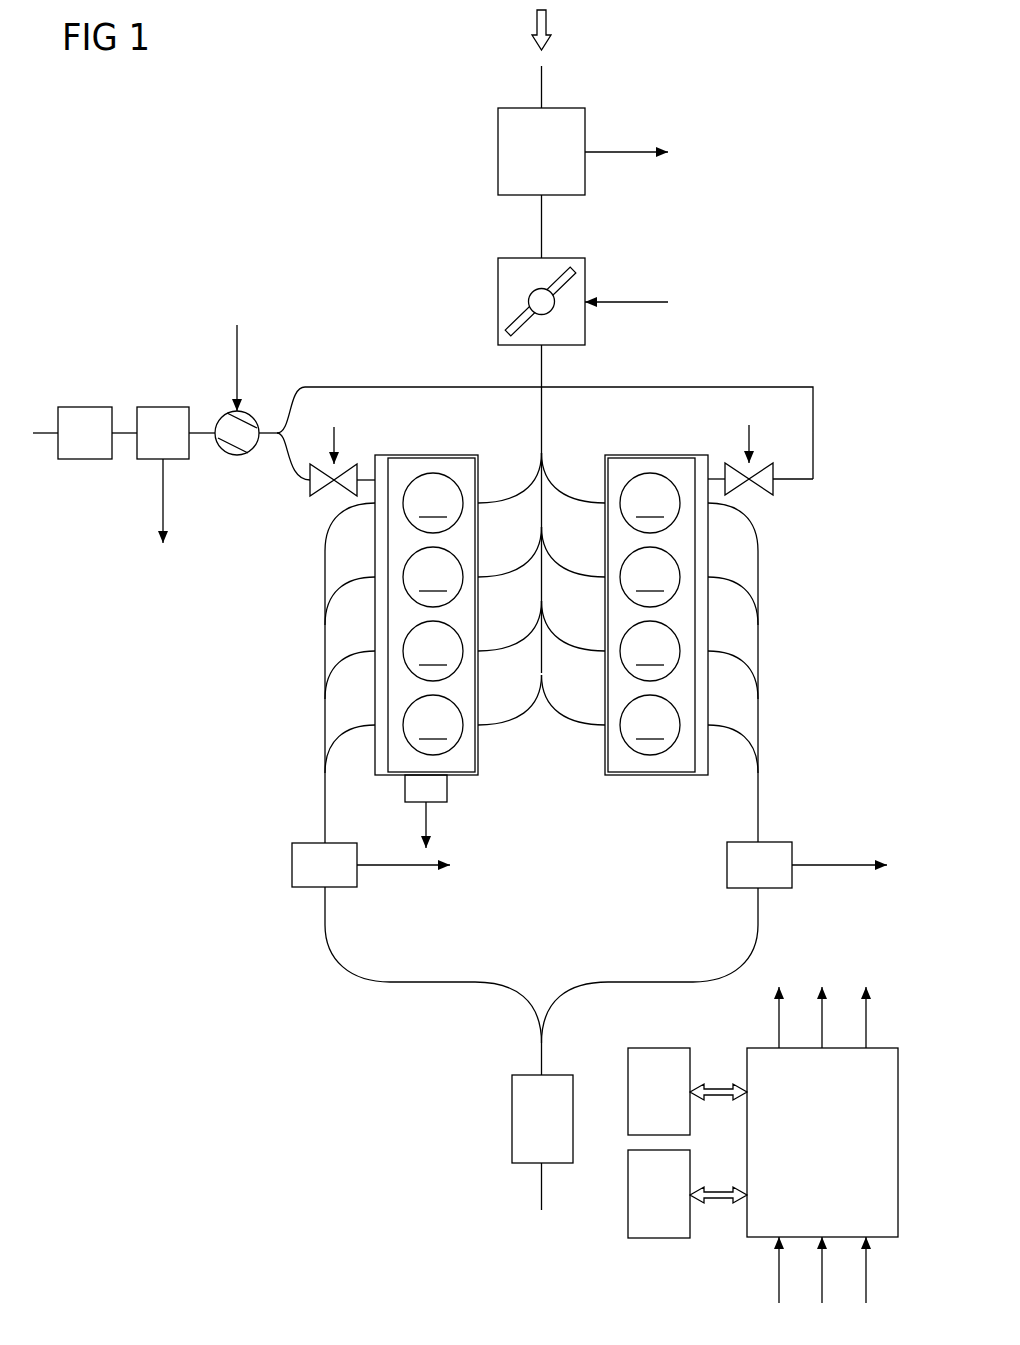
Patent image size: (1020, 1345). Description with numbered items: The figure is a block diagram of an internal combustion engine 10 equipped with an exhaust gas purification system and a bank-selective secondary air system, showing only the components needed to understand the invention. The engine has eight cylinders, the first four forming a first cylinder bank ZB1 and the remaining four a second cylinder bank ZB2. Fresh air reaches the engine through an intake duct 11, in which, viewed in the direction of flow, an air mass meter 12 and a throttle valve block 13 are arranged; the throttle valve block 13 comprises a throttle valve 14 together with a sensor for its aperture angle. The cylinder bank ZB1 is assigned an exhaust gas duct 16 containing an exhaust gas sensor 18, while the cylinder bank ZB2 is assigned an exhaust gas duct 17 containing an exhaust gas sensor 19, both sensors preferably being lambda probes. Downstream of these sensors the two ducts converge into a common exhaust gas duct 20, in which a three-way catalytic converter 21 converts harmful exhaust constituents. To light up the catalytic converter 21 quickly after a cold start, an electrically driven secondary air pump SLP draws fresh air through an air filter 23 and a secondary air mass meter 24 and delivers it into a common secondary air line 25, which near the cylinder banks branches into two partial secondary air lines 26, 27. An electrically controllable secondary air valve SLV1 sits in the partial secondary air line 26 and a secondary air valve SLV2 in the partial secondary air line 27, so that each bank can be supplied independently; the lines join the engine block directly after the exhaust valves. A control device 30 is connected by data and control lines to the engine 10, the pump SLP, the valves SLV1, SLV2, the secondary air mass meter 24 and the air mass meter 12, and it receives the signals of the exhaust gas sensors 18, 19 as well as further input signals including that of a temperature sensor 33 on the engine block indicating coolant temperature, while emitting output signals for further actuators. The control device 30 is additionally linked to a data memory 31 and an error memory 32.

The internal combustion engine 10 is at (541, 684).
The intake duct 11 is at (541, 430).
The air mass meter 12 is at (498, 152).
The throttle valve block 13 is at (548, 301).
The throttle valve 14 is at (575, 279).
The exhaust gas duct 16 is at (325, 665).
The exhaust gas duct 17 is at (758, 662).
The exhaust gas sensor 18 is at (292, 865).
The exhaust gas sensor 19 is at (727, 865).
The common exhaust gas duct 20 is at (541, 1060).
The three-way catalytic converter 21 is at (512, 1118).
The air filter 23 is at (85, 460).
The secondary air mass meter 24 is at (162, 407).
The common secondary air line 25 is at (265, 437).
The partial secondary air line 26 is at (307, 481).
The partial secondary air line 27 is at (350, 387).
The control device 30 is at (758, 1240).
The data memory 31 is at (628, 1222).
The error memory 32 is at (628, 1060).
The temperature sensor 33 is at (405, 783).
The secondary air pump SLP is at (248, 412).
The secondary air valve SLV1 is at (316, 464).
The secondary air valve SLV2 is at (773, 488).
The first cylinder bank ZB1 is at (458, 776).
The second cylinder bank ZB2 is at (652, 776).